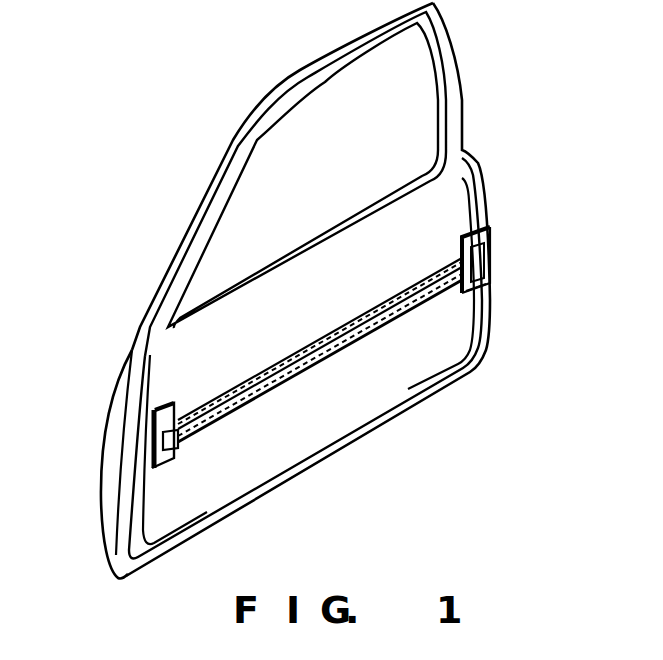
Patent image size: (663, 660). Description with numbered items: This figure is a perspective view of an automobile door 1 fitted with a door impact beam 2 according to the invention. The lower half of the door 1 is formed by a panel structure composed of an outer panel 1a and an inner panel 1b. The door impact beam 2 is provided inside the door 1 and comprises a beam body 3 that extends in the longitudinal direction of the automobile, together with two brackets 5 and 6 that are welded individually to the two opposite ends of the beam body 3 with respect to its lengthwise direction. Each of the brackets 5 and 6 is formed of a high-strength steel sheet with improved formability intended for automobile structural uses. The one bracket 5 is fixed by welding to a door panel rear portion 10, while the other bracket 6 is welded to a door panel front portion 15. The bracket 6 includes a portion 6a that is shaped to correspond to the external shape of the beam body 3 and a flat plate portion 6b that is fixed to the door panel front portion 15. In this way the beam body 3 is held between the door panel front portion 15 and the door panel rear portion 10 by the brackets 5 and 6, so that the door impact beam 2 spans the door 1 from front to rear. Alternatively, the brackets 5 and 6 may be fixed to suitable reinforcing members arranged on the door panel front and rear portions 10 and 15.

The door 1 is at (181, 182).
The outer panel 1a is at (445, 388).
The inner panel 1b is at (115, 383).
The door impact beam 2 is at (352, 352).
The beam body 3 is at (272, 388).
The bracket 5 is at (478, 288).
The bracket 6 is at (148, 462).
The portion shaped corresponding to the external shape of the beam body 6a is at (178, 448).
The flat plate portion 6b is at (150, 445).
The door panel rear portion 10 is at (490, 250).
The door panel front portion 15 is at (150, 500).